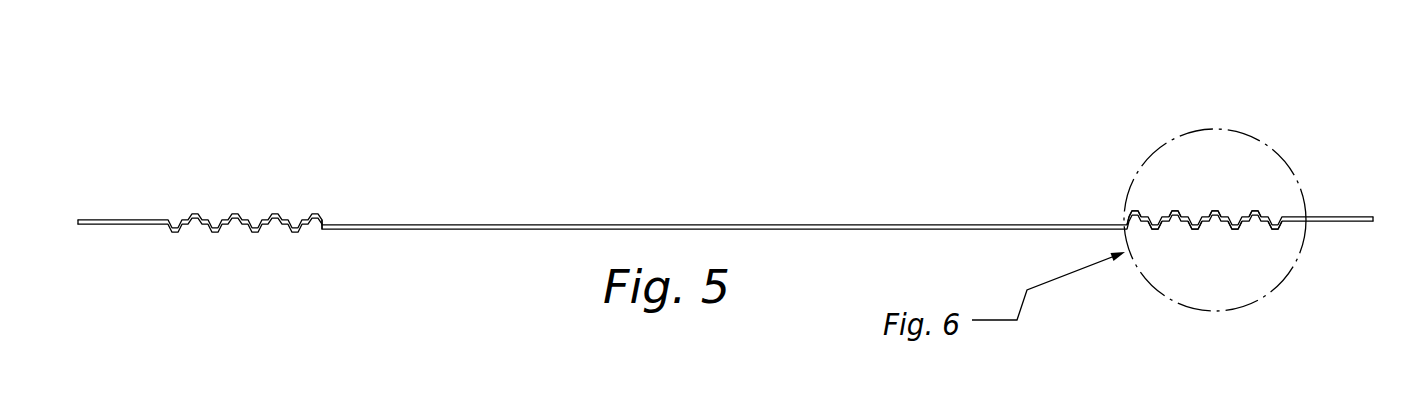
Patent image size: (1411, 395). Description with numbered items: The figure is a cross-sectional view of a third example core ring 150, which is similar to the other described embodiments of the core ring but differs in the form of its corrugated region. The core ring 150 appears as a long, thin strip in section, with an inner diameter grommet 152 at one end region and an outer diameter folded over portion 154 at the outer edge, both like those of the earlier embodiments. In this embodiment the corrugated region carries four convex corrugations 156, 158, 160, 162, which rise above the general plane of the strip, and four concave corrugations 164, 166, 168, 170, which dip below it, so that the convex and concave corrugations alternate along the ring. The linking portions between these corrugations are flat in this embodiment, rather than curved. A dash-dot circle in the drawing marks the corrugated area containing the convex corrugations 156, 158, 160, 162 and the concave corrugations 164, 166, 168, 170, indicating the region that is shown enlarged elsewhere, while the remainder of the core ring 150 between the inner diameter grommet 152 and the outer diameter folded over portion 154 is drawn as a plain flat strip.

The core ring 150 is at (242, 180).
The inner diameter grommet 152 is at (318, 223).
The outer diameter folded over portion 154 is at (88, 220).
The convex corrugation 156 is at (1140, 214).
The convex corrugation 158 is at (1180, 214).
The convex corrugation 160 is at (1217, 214).
The convex corrugation 162 is at (1257, 214).
The concave corrugation 164 is at (1157, 226).
The concave corrugation 166 is at (1197, 226).
The concave corrugation 168 is at (1237, 226).
The concave corrugation 170 is at (1277, 226).